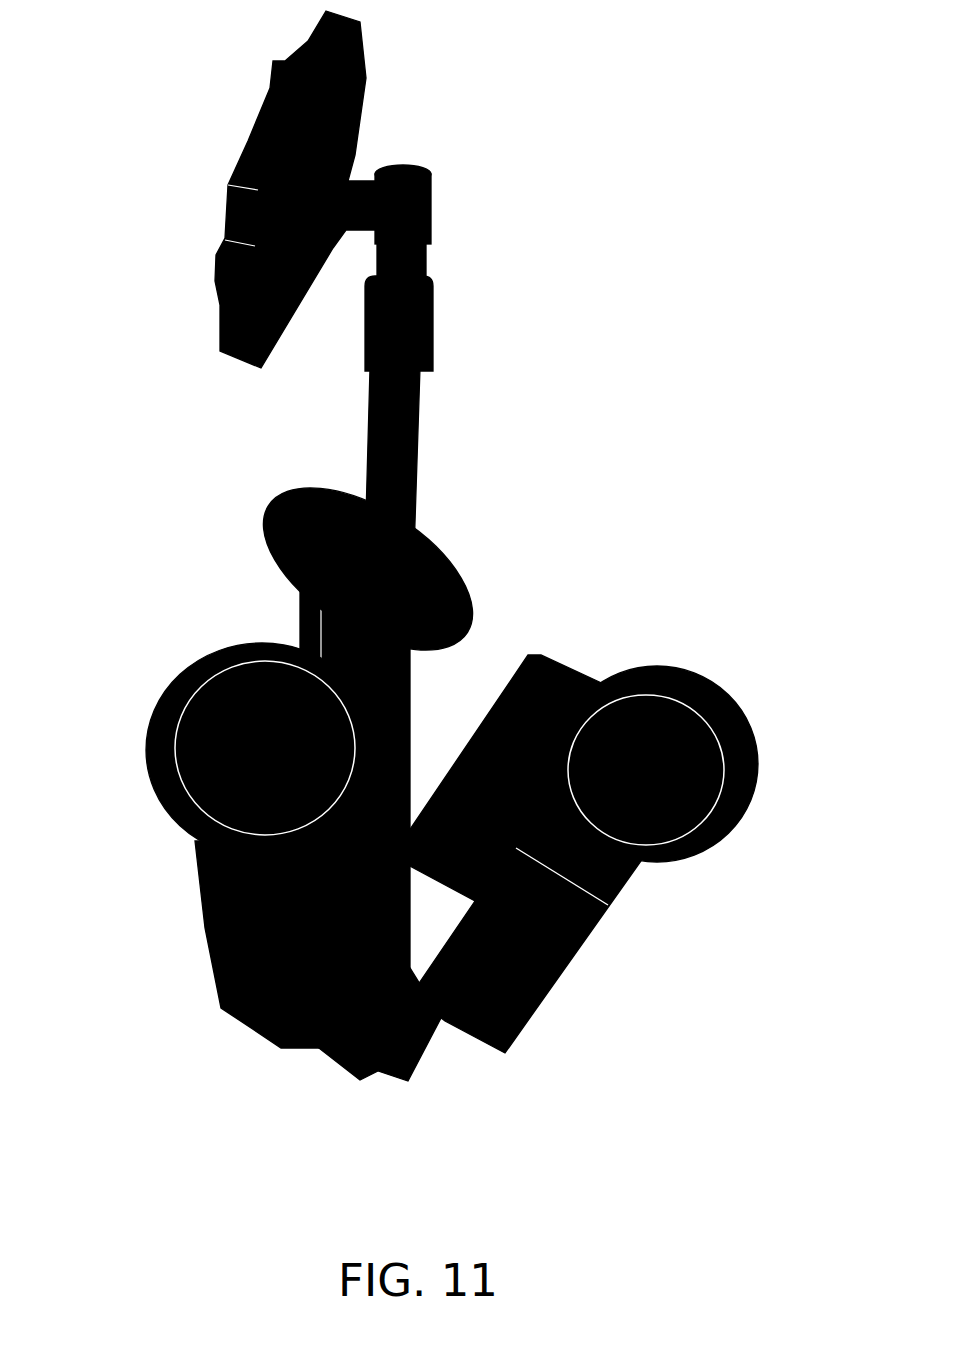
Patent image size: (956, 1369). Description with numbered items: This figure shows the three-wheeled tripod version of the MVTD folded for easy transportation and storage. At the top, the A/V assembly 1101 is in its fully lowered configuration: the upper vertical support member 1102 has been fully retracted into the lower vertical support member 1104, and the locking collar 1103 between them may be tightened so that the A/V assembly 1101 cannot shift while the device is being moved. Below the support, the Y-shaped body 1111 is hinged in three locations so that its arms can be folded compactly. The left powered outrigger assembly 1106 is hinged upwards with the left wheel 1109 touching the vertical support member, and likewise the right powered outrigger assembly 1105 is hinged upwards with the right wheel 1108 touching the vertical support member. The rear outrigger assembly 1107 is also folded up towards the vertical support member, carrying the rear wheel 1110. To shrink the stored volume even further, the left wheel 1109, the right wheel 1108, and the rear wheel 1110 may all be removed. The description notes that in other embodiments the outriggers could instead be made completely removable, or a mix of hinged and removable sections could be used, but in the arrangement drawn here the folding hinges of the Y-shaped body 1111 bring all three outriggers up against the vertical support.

The A/V assembly 1101 is at (243, 133).
The upper vertical support member 1102 is at (405, 257).
The locking collar 1103 is at (400, 324).
The lower vertical support member 1104 is at (397, 422).
The right powered outrigger assembly 1105 is at (292, 597).
The left powered outrigger assembly 1106 is at (192, 877).
The rear outrigger assembly 1107 is at (562, 923).
The right wheel 1108 is at (443, 560).
The left wheel 1109 is at (192, 752).
The rear wheel 1110 is at (703, 777).
The Y-shaped body 1111 is at (387, 1030).